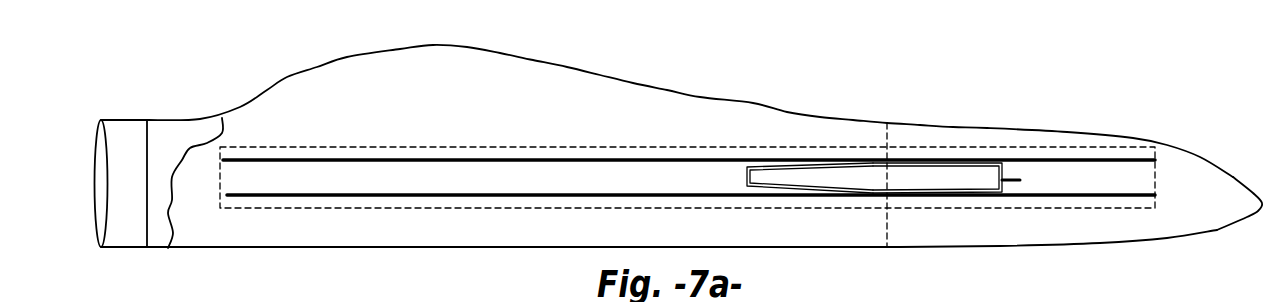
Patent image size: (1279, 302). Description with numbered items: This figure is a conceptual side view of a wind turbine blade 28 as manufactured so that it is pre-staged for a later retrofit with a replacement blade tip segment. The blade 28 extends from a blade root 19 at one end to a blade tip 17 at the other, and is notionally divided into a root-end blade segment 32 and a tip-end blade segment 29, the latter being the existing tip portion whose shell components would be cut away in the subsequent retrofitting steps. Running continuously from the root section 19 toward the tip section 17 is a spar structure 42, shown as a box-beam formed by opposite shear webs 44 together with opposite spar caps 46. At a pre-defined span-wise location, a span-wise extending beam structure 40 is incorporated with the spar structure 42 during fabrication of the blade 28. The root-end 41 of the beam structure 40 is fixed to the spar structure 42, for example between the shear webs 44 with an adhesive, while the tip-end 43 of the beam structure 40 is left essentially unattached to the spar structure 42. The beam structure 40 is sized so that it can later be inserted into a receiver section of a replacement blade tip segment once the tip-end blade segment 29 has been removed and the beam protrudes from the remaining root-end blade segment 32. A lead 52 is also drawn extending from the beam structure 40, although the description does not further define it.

The blade tip 17 is at (1227, 180).
The blade root 19 is at (172, 133).
The rotor blade 28 is at (679, 147).
The tip-end blade segment 29 is at (1087, 245).
The root-end blade segment 32 is at (318, 70).
The beam structure 40 is at (911, 166).
The root-end of the beam structure 41 is at (778, 180).
The spar structure 42 is at (687, 167).
The tip-end of the beam structure 43 is at (962, 173).
The shear webs 44 is at (438, 158).
The spar caps 46 is at (353, 147).
The lead wire 52 is at (1019, 180).